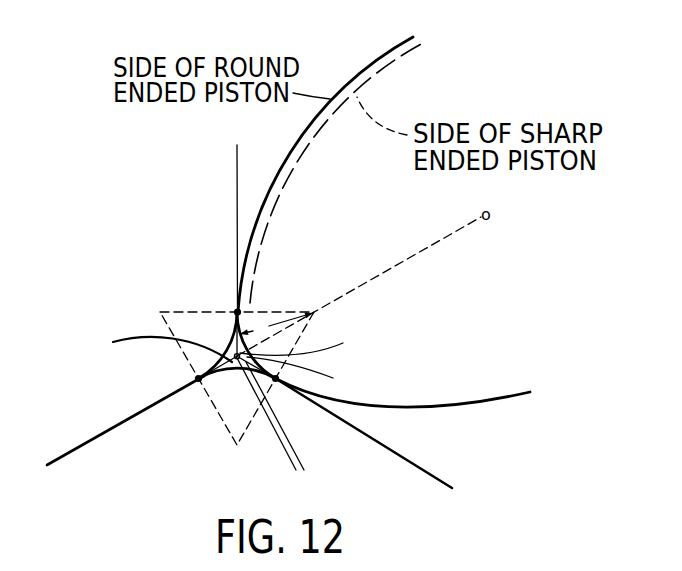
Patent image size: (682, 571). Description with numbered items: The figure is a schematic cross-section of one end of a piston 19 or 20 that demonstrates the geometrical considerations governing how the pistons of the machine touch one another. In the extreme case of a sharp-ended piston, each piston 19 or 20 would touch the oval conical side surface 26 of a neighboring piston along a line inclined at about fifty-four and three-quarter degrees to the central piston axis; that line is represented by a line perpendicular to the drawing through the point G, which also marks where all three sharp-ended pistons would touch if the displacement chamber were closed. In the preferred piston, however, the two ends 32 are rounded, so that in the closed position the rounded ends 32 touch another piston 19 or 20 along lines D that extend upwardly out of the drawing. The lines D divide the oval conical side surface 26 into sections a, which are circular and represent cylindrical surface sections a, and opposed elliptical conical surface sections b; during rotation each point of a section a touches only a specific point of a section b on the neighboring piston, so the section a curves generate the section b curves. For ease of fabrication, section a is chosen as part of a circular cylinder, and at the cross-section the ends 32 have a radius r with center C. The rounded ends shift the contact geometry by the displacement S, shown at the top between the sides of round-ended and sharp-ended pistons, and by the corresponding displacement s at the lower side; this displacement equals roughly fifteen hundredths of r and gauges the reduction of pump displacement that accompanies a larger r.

The equatorial piston 19 is at (437, 416).
The polar piston 20 is at (433, 380).
The oval conical side surface 26 is at (400, 410).
The rounded end 32 is at (187, 437).
The displacement S is at (425, 78).
The displacement s is at (318, 442).
The elliptical conical surface section b is at (297, 138).
The line of contact D is at (229, 350).
The center of radius r C is at (325, 328).
The radius r is at (276, 325).
The contact point of sharp-ended pistons G is at (162, 346).
The cylindrical surface section a is at (300, 375).